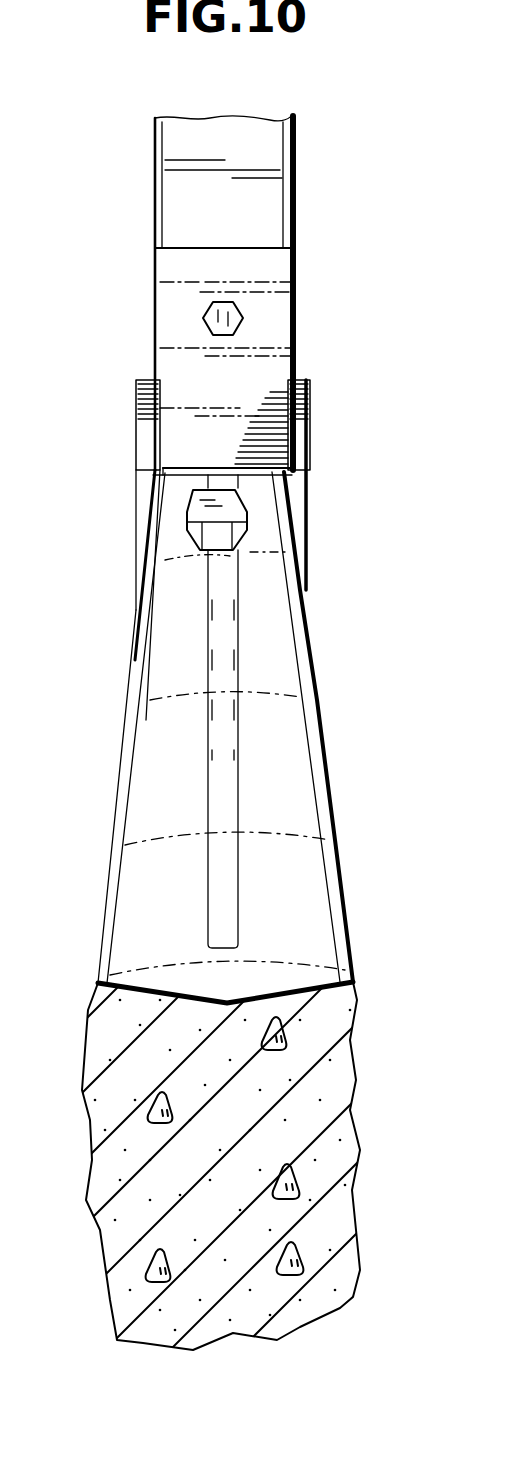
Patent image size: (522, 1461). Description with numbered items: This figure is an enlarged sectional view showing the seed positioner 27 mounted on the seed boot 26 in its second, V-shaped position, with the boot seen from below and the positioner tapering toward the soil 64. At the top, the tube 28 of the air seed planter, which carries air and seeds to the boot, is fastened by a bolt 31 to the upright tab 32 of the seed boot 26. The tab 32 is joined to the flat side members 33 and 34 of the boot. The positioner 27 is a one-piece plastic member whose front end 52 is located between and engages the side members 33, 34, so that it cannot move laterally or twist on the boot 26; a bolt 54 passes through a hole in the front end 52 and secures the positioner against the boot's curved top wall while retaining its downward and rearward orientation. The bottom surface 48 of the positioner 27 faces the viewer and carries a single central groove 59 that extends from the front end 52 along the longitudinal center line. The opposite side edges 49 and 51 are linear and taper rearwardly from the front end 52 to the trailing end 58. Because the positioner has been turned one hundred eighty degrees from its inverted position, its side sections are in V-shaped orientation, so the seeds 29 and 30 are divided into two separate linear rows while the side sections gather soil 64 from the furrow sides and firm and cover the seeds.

The seed boot 26 is at (308, 330).
The seed positioner 27 is at (340, 762).
The tube 28 is at (272, 153).
The seeds 29 is at (300, 1262).
The seeds 30 is at (153, 1270).
The bolt 31 is at (238, 315).
The upright tab 32 is at (273, 263).
The side member 33 is at (297, 430).
The side member 34 is at (149, 430).
The bottom surface 48 is at (154, 782).
The side edge 49 is at (347, 908).
The side edge 51 is at (104, 903).
The front end 52 is at (197, 478).
The bolt 54 is at (240, 515).
The trailing end 58 is at (152, 997).
The central groove 59 is at (223, 612).
The soil 64 is at (125, 1205).